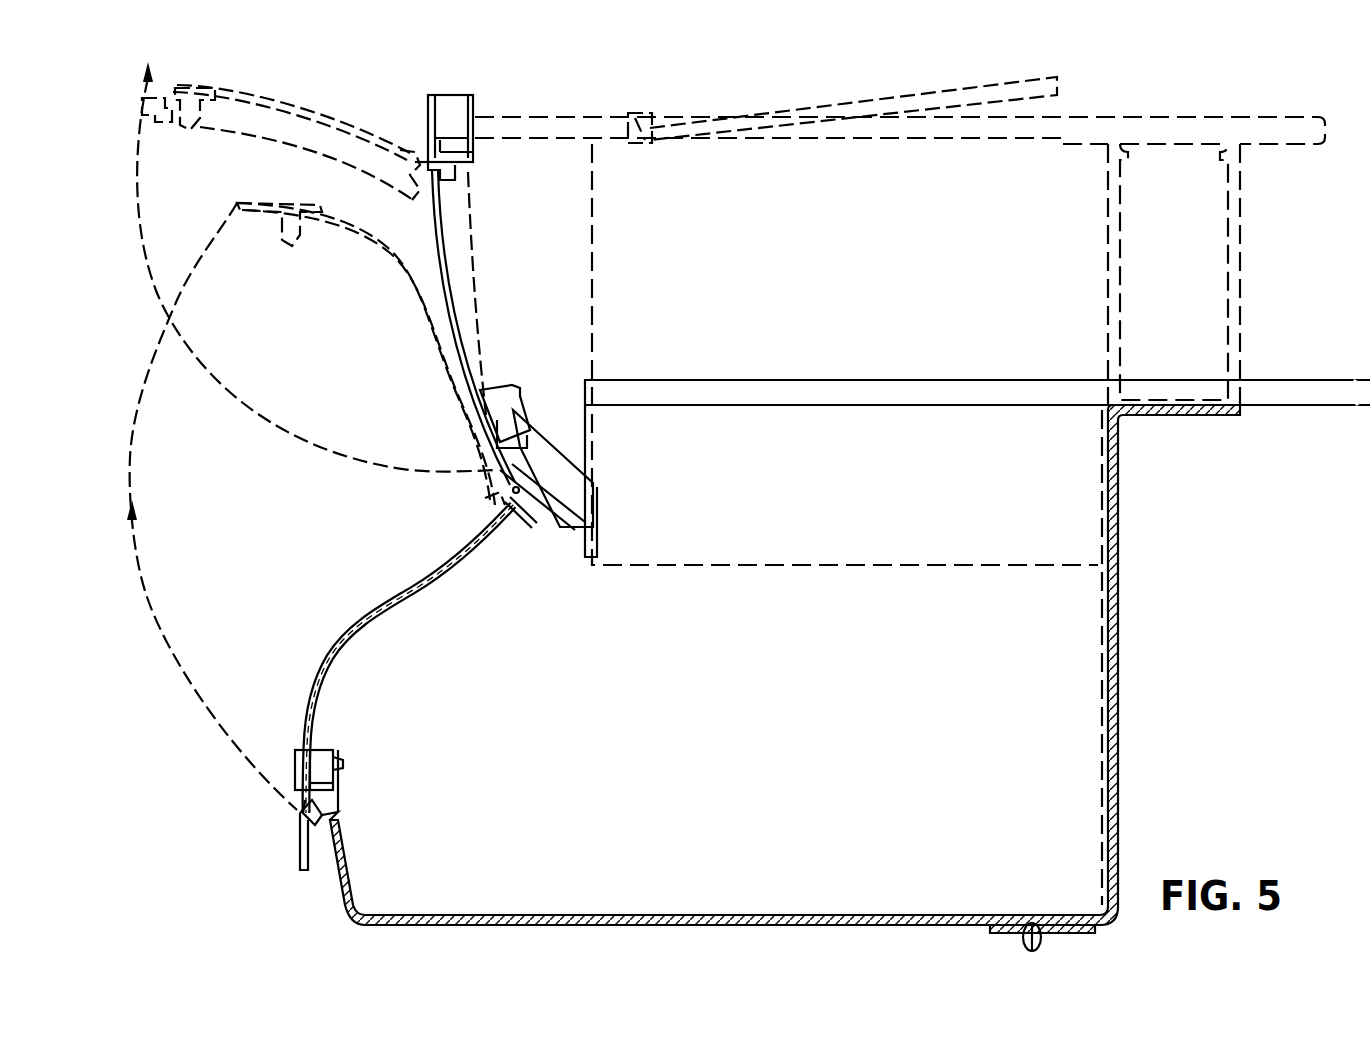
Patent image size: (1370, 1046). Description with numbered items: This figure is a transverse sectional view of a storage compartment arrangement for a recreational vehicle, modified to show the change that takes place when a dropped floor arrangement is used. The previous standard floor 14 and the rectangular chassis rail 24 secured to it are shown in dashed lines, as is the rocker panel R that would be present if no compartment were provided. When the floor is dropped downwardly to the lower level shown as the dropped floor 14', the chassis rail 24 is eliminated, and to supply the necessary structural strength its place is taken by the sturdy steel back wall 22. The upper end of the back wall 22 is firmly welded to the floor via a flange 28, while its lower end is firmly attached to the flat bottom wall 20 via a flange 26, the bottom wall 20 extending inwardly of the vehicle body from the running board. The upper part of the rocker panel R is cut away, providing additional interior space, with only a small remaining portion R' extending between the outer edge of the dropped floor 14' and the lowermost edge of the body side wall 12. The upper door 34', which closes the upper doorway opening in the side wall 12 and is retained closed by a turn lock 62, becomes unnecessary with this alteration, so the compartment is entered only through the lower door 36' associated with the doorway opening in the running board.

The side wall 12 is at (443, 112).
The floor 14 is at (900, 158).
The dropped floor 14' is at (977, 448).
The chassis rail 24 is at (1240, 280).
The flange 28 is at (1187, 412).
The back wall 22 is at (1117, 687).
The bottom wall 20 is at (793, 913).
The flange 26 is at (1030, 920).
The turn lock 62 is at (487, 397).
The upper door 34' is at (378, 311).
The lower door 36' is at (379, 687).
The rocker panel R is at (845, 354).
The remaining portion of rocker panel R' is at (619, 457).